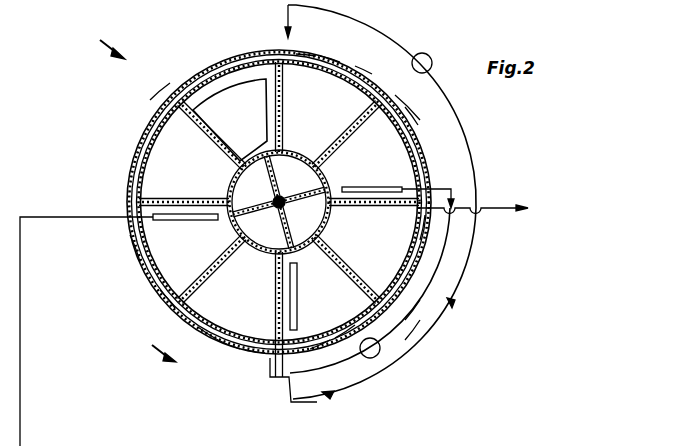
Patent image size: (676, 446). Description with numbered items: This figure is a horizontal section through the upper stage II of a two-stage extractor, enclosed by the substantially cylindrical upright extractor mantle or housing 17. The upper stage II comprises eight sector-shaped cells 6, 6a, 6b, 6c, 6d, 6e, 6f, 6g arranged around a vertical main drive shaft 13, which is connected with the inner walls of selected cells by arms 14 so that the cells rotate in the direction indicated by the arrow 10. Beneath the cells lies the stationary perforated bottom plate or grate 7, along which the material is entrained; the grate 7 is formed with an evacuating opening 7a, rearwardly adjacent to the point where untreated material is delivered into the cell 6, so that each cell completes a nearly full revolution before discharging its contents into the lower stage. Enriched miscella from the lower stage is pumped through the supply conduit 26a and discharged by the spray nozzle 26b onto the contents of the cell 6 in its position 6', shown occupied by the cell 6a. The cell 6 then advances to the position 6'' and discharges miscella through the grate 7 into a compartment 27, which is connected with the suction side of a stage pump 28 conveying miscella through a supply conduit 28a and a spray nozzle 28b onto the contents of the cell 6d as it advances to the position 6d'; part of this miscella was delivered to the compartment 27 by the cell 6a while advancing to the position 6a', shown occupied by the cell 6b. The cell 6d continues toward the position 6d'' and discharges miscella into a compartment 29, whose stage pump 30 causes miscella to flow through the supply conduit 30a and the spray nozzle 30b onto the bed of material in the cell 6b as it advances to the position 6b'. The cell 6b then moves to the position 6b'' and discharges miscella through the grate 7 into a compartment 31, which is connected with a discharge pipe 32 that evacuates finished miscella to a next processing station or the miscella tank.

The sector-shaped cell 6 is at (268, 202).
The position of cell 6' is at (125, 250).
The position of cell 6'' is at (252, 364).
The cell 6a is at (142, 300).
The position of cell 6a' is at (200, 348).
The cell 6b is at (221, 361).
The position of cell 6b' is at (366, 374).
The position of cell 6b'' is at (447, 323).
The cell 6c is at (315, 335).
The cell 6d is at (398, 303).
The position of cell 6d' is at (453, 126).
The position of cell 6d'' is at (319, 48).
The cell 6e is at (425, 118).
The cell 6f is at (325, 78).
The cell 6g is at (243, 90).
The stationary bottom plate or grate 7 is at (271, 72).
The evacuating opening 7a is at (218, 97).
The arrow 10 is at (152, 355).
The vertical main drive shaft 13 is at (282, 197).
The arms 14 is at (292, 199).
The extractor mantle or housing 17 is at (164, 104).
The supply conduit 26a is at (21, 372).
The spray nozzle 26b is at (190, 221).
The compartment 27 is at (273, 380).
The stage pump 28 is at (380, 355).
The supply conduit 28a is at (453, 200).
The spray nozzle 28b is at (370, 186).
The compartment 29 is at (365, 84).
The stage pump 30 is at (430, 57).
The supply conduit 30a is at (423, 338).
The spray nozzle 30b is at (298, 288).
The compartment 31 is at (432, 228).
The discharge pipe 32 is at (500, 211).
The upper stage II is at (101, 45).